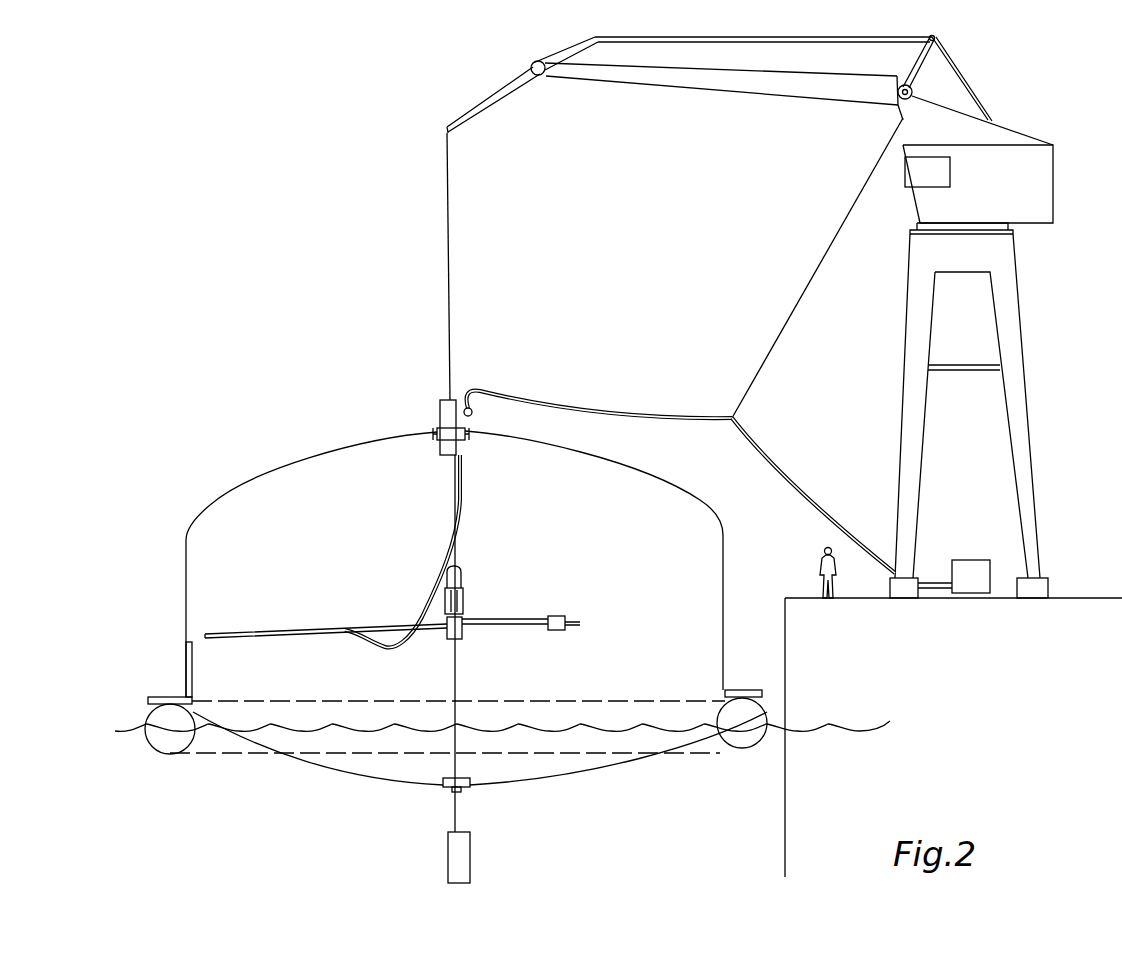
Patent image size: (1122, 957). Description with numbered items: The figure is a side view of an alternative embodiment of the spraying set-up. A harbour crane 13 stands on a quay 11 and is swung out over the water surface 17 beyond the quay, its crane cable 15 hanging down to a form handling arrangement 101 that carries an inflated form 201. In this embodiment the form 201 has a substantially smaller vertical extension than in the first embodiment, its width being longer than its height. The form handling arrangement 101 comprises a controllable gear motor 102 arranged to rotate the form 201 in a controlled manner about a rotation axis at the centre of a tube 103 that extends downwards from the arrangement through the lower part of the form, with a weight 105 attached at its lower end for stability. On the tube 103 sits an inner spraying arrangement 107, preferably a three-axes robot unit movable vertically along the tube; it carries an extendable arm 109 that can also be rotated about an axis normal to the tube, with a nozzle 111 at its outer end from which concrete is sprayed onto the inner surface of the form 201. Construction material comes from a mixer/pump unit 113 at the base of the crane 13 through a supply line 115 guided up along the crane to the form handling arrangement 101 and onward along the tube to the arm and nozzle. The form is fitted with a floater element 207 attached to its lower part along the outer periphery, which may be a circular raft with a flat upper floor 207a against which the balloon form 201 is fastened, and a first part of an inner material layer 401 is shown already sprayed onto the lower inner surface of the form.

The quay 11 is at (842, 660).
The harbour crane 13 is at (1030, 163).
The crane cable 15 is at (448, 183).
The water surface 17 is at (124, 733).
The form handling arrangement 101 is at (450, 420).
The controllable gear motor 102 is at (482, 410).
The tube 103 is at (457, 677).
The weight 105 is at (463, 858).
The inner spraying arrangement 107 is at (463, 617).
The arm 109 is at (383, 627).
The nozzle 111 is at (208, 628).
The mixer/pump unit 113 is at (975, 572).
The supply line 115 is at (780, 470).
The inflated form 201 is at (753, 558).
The floater element 207 is at (163, 745).
The flat upper floor 207a is at (182, 662).
The inner material layer 401 is at (183, 660).